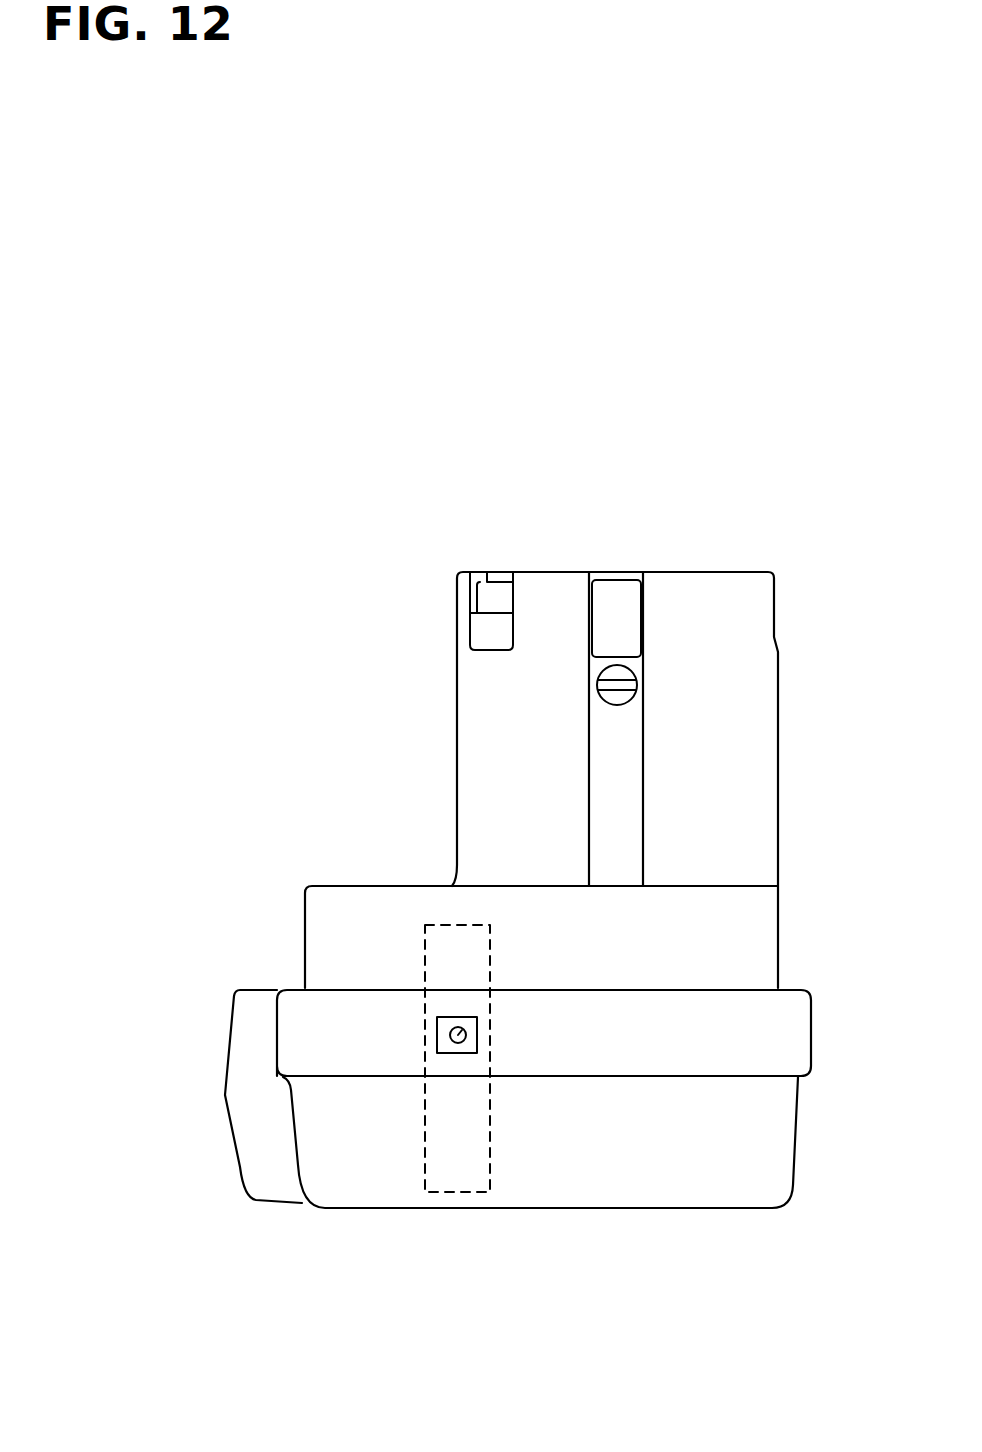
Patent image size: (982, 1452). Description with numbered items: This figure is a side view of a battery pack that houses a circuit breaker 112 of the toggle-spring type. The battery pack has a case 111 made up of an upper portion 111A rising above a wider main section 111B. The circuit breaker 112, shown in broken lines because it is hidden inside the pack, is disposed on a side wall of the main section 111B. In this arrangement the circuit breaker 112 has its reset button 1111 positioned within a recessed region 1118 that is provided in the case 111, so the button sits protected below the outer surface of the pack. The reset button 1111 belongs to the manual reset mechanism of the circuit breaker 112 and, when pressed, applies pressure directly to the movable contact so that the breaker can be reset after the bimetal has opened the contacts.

The case 111 is at (510, 890).
The upper housing portion of battery pack 111A is at (433, 723).
The main section 111B is at (287, 937).
The reset button 1111 is at (437, 1030).
The recessed region 1118 is at (480, 1036).
The circuit breaker 112 is at (445, 1165).